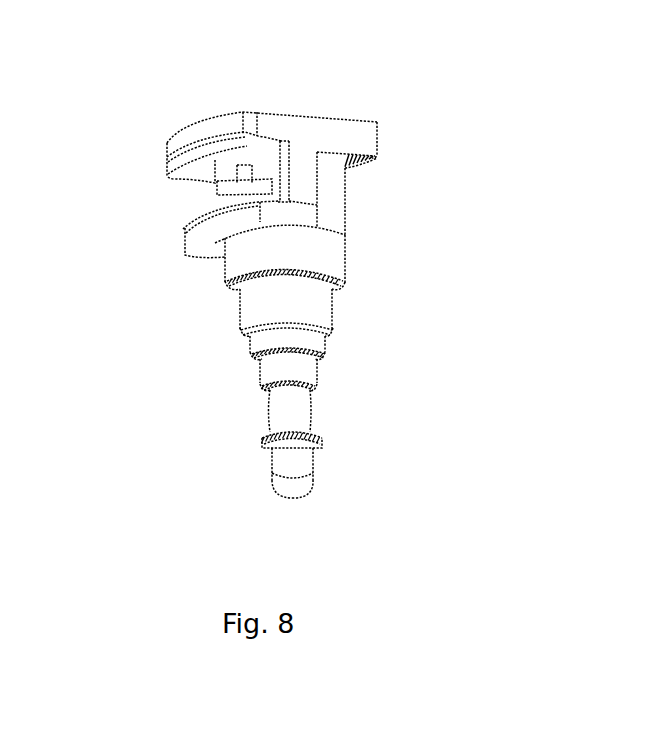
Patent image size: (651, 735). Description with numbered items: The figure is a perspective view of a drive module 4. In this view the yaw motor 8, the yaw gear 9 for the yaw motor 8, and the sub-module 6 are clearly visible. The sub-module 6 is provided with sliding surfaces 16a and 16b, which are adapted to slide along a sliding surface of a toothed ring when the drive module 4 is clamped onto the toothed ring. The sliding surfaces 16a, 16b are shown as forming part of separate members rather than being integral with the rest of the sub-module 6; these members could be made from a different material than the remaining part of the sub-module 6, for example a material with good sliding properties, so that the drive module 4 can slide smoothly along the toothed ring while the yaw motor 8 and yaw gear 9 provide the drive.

The drive module 4 is at (293, 270).
The sub-module 6 is at (311, 137).
The yaw motor 8 is at (296, 407).
The yaw gear 9 is at (268, 295).
The sliding surface 16a is at (210, 169).
The sliding surface 16b is at (223, 197).